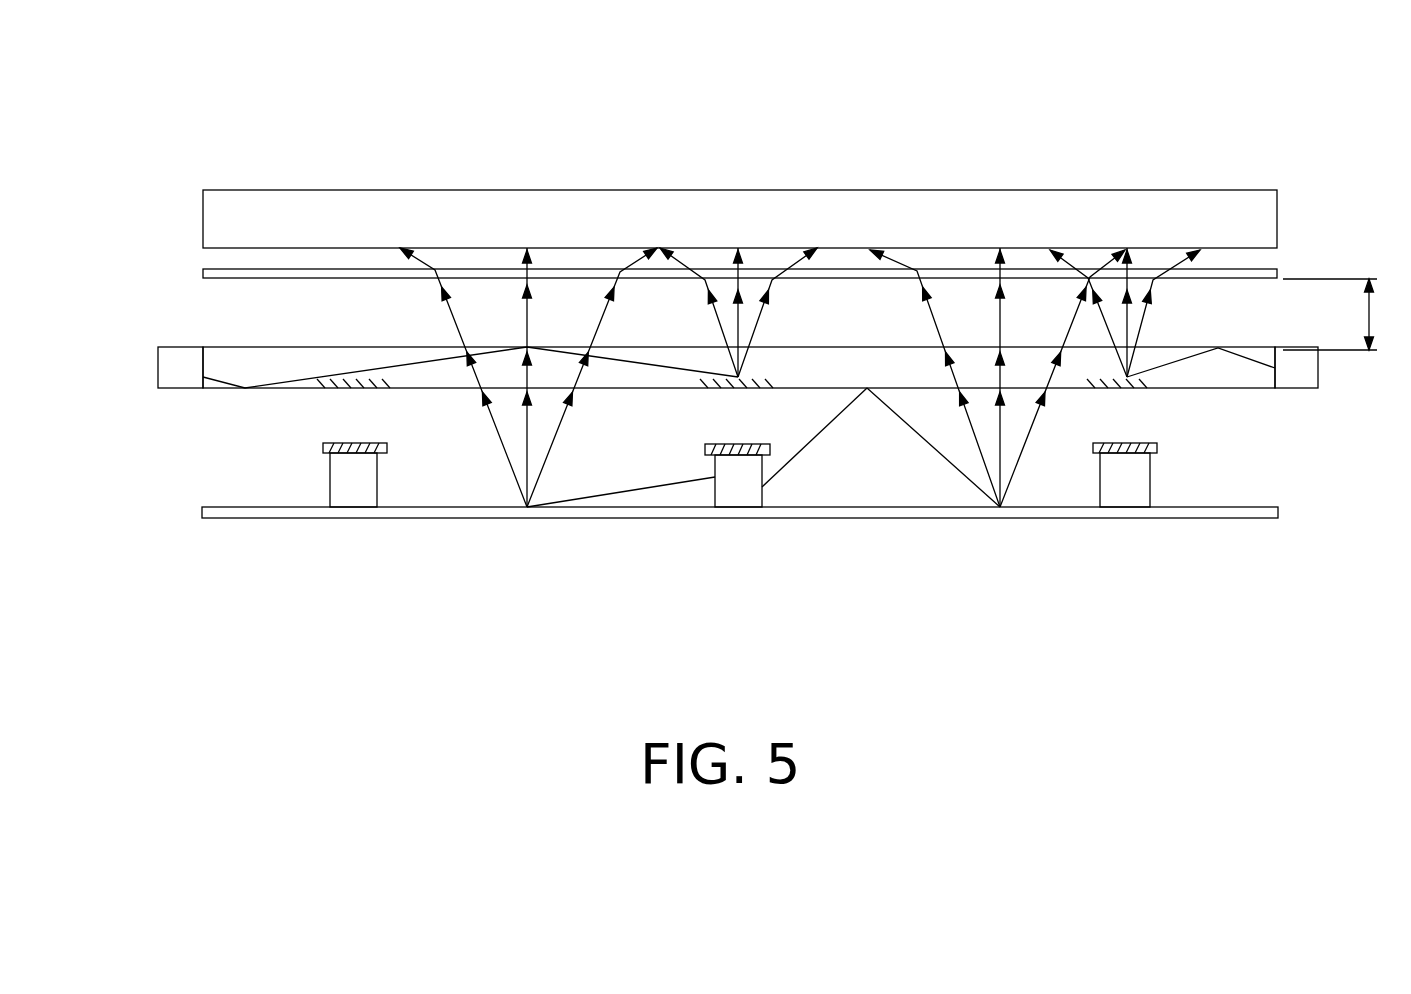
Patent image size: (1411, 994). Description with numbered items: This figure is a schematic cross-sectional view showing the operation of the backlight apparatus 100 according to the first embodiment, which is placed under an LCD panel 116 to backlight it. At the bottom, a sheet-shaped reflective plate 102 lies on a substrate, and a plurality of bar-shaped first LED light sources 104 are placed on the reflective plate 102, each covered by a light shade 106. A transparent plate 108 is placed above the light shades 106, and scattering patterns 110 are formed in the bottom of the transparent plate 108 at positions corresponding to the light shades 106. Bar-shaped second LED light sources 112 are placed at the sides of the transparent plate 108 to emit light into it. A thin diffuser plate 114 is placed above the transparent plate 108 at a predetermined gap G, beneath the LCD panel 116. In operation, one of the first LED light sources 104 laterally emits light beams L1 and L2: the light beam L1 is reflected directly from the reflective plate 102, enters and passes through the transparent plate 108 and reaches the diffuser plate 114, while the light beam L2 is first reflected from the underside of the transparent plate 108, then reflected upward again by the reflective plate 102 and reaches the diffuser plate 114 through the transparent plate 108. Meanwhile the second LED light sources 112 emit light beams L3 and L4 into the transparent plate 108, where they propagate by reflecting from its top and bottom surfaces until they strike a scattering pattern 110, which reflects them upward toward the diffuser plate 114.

The backlight apparatus 100 is at (1068, 96).
The reflective plate 102 is at (202, 507).
The first LED light source 104 is at (357, 495).
The light shade 106 is at (327, 455).
The transparent plate 108 is at (247, 350).
The scattering pattern 110 is at (317, 388).
The second LED light source 112 is at (158, 363).
The diffuser plate 114 is at (203, 273).
The LCD panel 116 is at (203, 203).
The light beam L1 is at (640, 490).
The light beam L2 is at (938, 452).
The light beam L3 is at (440, 360).
The light beam L4 is at (1252, 363).
The gap G is at (1343, 314).